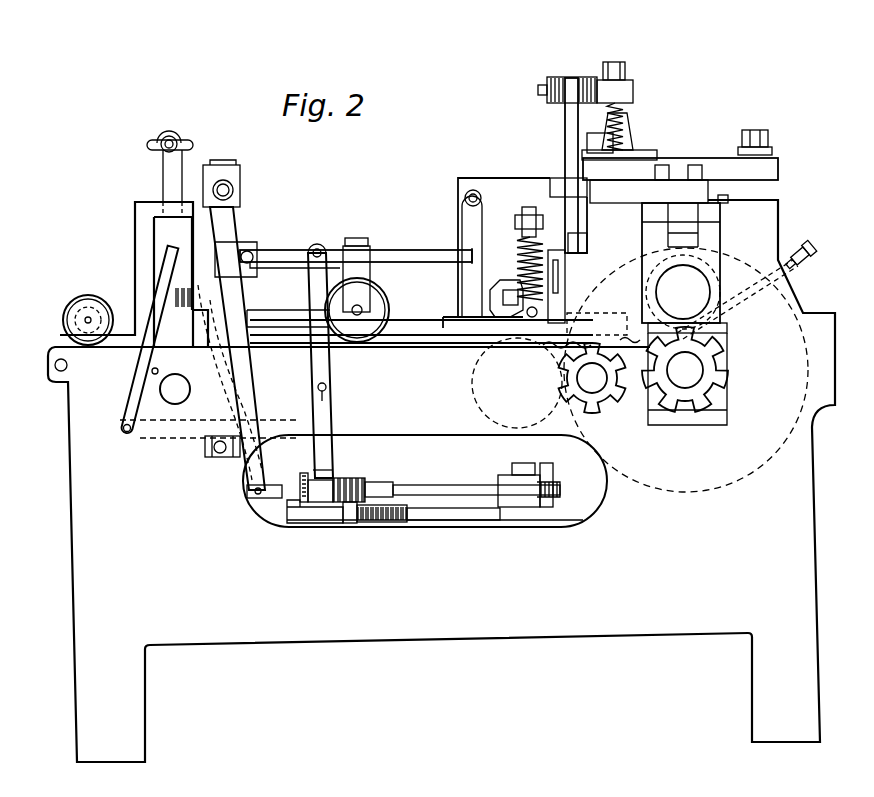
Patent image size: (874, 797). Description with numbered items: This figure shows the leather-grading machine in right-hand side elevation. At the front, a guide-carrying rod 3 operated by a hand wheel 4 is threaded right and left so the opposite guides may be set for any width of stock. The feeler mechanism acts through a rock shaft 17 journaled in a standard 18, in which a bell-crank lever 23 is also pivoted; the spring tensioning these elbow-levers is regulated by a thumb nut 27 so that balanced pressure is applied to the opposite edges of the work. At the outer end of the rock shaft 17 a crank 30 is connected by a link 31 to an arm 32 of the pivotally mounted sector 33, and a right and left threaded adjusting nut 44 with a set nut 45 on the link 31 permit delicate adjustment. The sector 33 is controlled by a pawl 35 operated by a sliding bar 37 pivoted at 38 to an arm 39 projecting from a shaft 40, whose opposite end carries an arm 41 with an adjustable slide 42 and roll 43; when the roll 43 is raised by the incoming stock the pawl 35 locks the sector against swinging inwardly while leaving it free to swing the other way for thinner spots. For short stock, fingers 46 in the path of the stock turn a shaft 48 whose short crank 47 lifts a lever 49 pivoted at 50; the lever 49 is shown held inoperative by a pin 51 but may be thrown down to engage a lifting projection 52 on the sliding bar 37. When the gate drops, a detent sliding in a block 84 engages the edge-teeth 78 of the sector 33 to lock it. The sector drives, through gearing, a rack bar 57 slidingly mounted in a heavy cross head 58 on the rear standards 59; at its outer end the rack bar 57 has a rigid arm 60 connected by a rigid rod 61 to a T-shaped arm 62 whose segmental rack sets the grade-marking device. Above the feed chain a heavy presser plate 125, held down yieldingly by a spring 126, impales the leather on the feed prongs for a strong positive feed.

The guide-carrying rod 3 is at (86, 321).
The hand wheel 4 is at (89, 300).
The rock shaft 17 is at (235, 190).
The standard 18 is at (205, 182).
The bell-crank lever 23 is at (163, 184).
The thumb nut 27 is at (148, 145).
The crank 30 is at (253, 493).
The link 31 is at (440, 485).
The arm 32 is at (516, 510).
The sector 33 is at (470, 522).
The pawl 35 is at (350, 524).
The sliding bar 37 is at (330, 430).
The pivot 38 is at (317, 248).
The arm 39 is at (274, 250).
The shaft 40 is at (250, 266).
The arm 41 is at (416, 250).
The adjustable slide 42 is at (358, 238).
The roll 43 is at (372, 306).
The adjusting nut 44 is at (352, 480).
The set nut 45 is at (306, 480).
The fingers 46 is at (203, 440).
The short crank 47 is at (212, 455).
The shaft 48 is at (220, 455).
The lever 49 is at (128, 413).
The pivot 50 is at (123, 426).
The pin 51 is at (150, 372).
The lifting projection 52 is at (316, 397).
The rack bar 57 is at (722, 202).
The cross head 58 is at (778, 167).
The rear standards 59 is at (702, 314).
The rigid arm 60 is at (625, 182).
The rigid rod 61 is at (552, 185).
The T-shaped arm 62 is at (565, 126).
The edge-teeth 78 is at (380, 524).
The block 84 is at (296, 524).
The presser plate 125 is at (418, 340).
The spring 126 is at (512, 240).